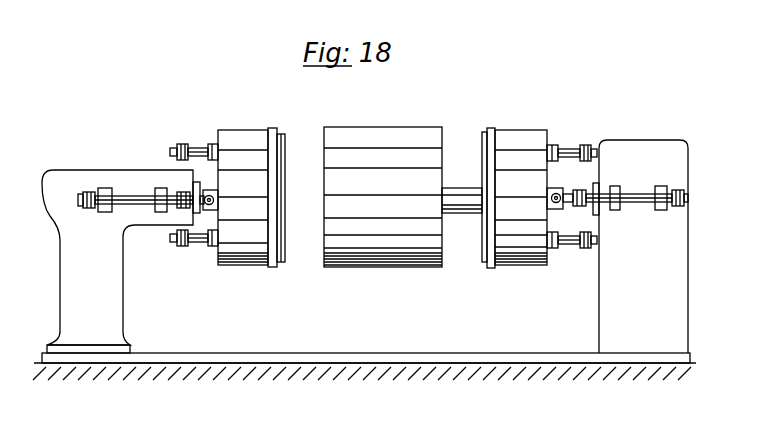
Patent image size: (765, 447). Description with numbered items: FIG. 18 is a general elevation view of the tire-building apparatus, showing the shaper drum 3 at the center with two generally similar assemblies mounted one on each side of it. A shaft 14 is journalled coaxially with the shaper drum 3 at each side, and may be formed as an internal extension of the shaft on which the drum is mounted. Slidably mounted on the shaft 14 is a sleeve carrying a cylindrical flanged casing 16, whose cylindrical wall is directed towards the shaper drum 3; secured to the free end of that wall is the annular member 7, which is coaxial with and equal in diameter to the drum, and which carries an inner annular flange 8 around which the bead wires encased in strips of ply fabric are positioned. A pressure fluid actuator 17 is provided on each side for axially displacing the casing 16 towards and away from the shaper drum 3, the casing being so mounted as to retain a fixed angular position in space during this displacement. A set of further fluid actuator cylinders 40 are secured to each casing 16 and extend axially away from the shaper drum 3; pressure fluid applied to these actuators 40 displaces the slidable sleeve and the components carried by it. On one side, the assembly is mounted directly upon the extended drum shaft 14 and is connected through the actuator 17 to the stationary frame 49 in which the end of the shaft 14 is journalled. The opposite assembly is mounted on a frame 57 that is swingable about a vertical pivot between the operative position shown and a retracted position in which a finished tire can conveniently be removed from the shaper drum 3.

The shaper drum 3 is at (392, 150).
The annular member 7 is at (272, 130).
The inner annular flange 8 is at (285, 138).
The shaft 14 is at (450, 194).
The cylindrical flanged casing 16 is at (233, 150).
The pressure fluid actuator 17 is at (122, 190).
The fluid actuator cylinders 40 is at (193, 146).
The stationary frame 49 is at (599, 320).
The frame 57 is at (107, 273).